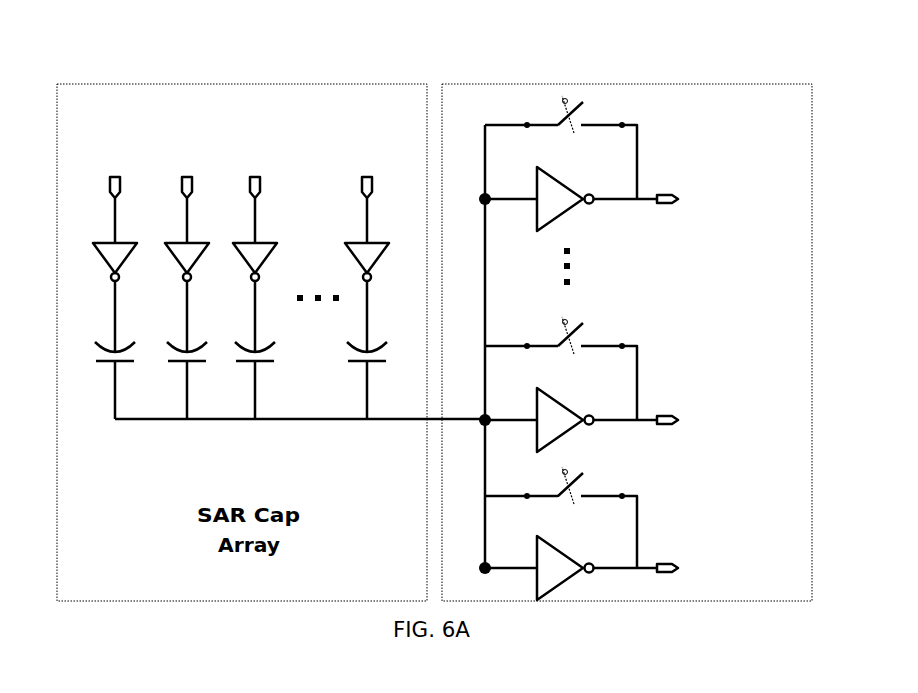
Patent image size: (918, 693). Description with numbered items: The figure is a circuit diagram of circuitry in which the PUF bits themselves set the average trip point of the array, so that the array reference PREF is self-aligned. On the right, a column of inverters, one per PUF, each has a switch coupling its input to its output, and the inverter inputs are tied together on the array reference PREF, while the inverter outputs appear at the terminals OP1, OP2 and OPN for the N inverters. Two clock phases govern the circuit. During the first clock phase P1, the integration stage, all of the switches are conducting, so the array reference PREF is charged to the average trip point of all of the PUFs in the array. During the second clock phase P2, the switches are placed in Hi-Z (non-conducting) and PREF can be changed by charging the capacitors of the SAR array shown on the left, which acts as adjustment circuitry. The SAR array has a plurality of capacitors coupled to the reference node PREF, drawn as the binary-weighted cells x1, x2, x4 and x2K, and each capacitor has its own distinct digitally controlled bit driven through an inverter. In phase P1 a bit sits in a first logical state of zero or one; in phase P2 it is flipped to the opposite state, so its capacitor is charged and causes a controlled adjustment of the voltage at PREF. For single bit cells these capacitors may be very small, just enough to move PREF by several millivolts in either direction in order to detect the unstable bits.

The first clock phase P1 is at (495, 37).
The second clock phase P2 is at (413, 66).
The unit capacitor cell driven by Bit 0 x1 is at (110, 284).
The 2x capacitor cell driven by Bit 1 x2 is at (182, 284).
The 4x capacitor cell driven by Bit 2 x4 is at (251, 284).
The 2^K capacitor cell driven by Bit K x2K is at (351, 284).
The array reference PREF is at (300, 346).
The inverter stage with switch producing output OP N OPN is at (623, 163).
The inverter stage with switch producing output OP 2 OP2 is at (618, 384).
The inverter stage with switch producing output OP 1 OP1 is at (623, 533).